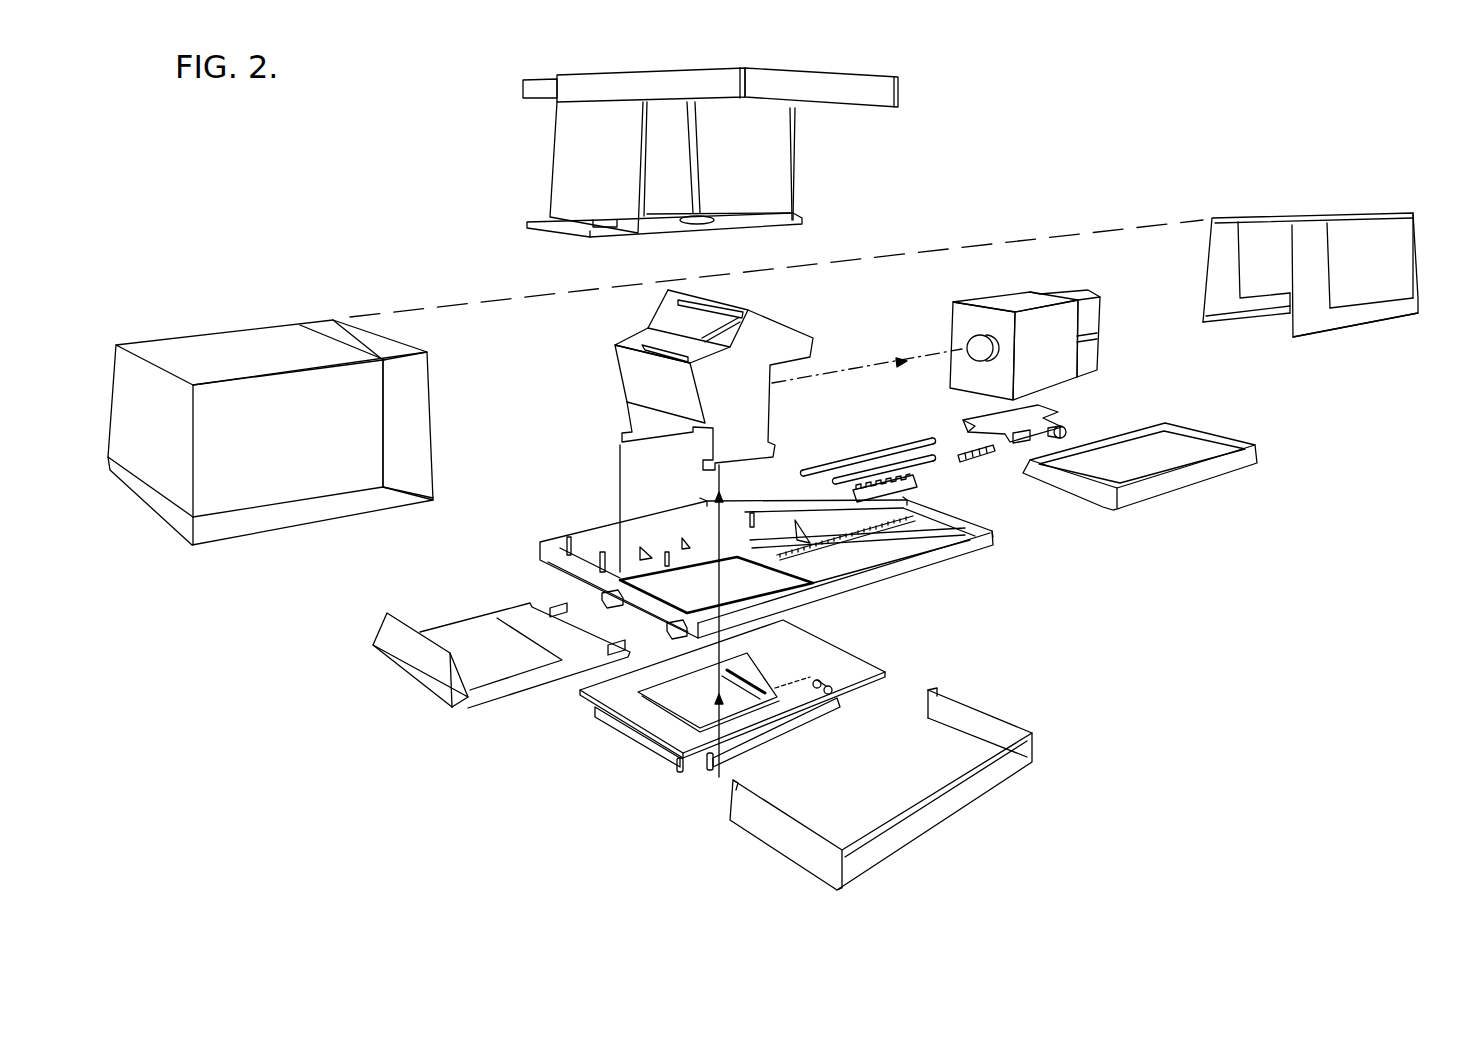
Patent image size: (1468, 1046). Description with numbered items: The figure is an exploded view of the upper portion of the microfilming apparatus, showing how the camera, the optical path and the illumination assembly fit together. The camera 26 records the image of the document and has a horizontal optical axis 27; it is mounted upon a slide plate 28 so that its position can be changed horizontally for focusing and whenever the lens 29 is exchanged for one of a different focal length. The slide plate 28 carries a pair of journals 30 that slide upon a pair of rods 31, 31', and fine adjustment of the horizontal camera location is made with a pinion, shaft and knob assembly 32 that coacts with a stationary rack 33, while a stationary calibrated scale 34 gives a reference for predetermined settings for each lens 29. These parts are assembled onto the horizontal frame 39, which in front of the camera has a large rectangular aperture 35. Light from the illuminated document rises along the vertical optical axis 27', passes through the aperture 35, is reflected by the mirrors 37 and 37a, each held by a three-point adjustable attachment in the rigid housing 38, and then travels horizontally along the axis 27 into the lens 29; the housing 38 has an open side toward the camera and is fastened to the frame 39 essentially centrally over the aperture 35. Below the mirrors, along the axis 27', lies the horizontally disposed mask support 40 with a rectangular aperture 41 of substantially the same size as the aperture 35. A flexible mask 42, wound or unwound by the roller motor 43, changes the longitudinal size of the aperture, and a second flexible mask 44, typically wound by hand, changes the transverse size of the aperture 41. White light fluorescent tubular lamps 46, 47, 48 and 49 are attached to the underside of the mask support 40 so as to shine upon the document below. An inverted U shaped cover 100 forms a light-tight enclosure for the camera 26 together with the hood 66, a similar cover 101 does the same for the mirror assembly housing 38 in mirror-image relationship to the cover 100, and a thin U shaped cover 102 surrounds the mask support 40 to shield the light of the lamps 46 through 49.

The camera 26 is at (1025, 345).
The optical axis 27 is at (867, 363).
The optical axis 27' is at (703, 601).
The slide plate 28 is at (1040, 406).
The lens 29 is at (979, 335).
The journals 30 is at (1021, 443).
The rod 31 is at (867, 457).
The rod 31' is at (870, 479).
The pinion, shaft and knob assembly 32 is at (1066, 432).
The stationary rack 33 is at (963, 462).
The stationary calibrated scale 34 is at (915, 481).
The rectangular aperture 35 is at (716, 585).
The mirror 37 is at (679, 361).
The mirror 37a is at (710, 323).
The rigid housing 38 is at (714, 380).
The horizontal frame 39 is at (766, 568).
The mask support 40 is at (732, 697).
The rectangular aperture 41 is at (665, 708).
The mask 42 is at (757, 672).
The roller motor 43 is at (826, 686).
The mask 44 is at (743, 691).
The fluorescent tubular lamp 46 is at (648, 747).
The fluorescent tubular lamp 47 is at (780, 737).
The fluorescent tubular lamp 48 is at (782, 687).
The fluorescent tubular lamp 49 is at (751, 690).
The hood 66 is at (850, 121).
The inverted U shaped cover 100 is at (1303, 215).
The cover 101 is at (265, 332).
The thin U shaped cover 102 is at (1007, 724).